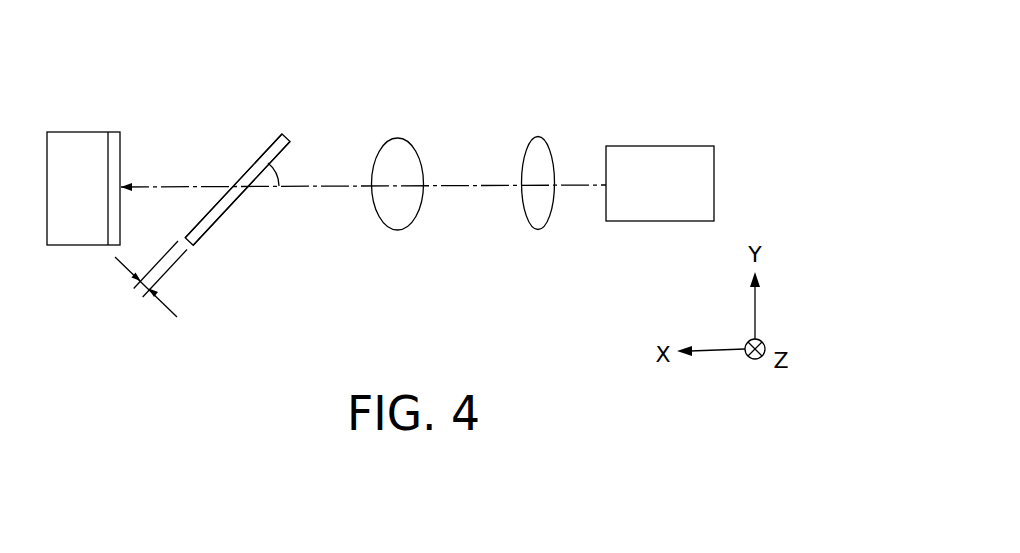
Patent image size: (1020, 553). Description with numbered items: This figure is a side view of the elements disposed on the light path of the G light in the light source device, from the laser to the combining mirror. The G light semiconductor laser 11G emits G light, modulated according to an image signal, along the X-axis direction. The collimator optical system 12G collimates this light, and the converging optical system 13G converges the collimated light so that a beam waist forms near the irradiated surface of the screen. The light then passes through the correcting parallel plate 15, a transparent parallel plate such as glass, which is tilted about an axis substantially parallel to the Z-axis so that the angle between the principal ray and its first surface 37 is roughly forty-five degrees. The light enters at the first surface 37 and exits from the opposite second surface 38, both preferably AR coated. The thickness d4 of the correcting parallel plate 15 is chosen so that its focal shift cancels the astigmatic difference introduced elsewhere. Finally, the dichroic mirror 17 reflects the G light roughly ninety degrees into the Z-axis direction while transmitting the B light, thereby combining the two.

The G light semiconductor laser 11G is at (658, 157).
The collimator optical system 12G is at (535, 147).
The converging optical system 13G is at (393, 148).
The correcting parallel plate 15 is at (265, 140).
The dichroic mirror 17 is at (77, 140).
The first surface 37 is at (224, 213).
The second surface 38 is at (247, 169).
The thickness d4 is at (146, 279).